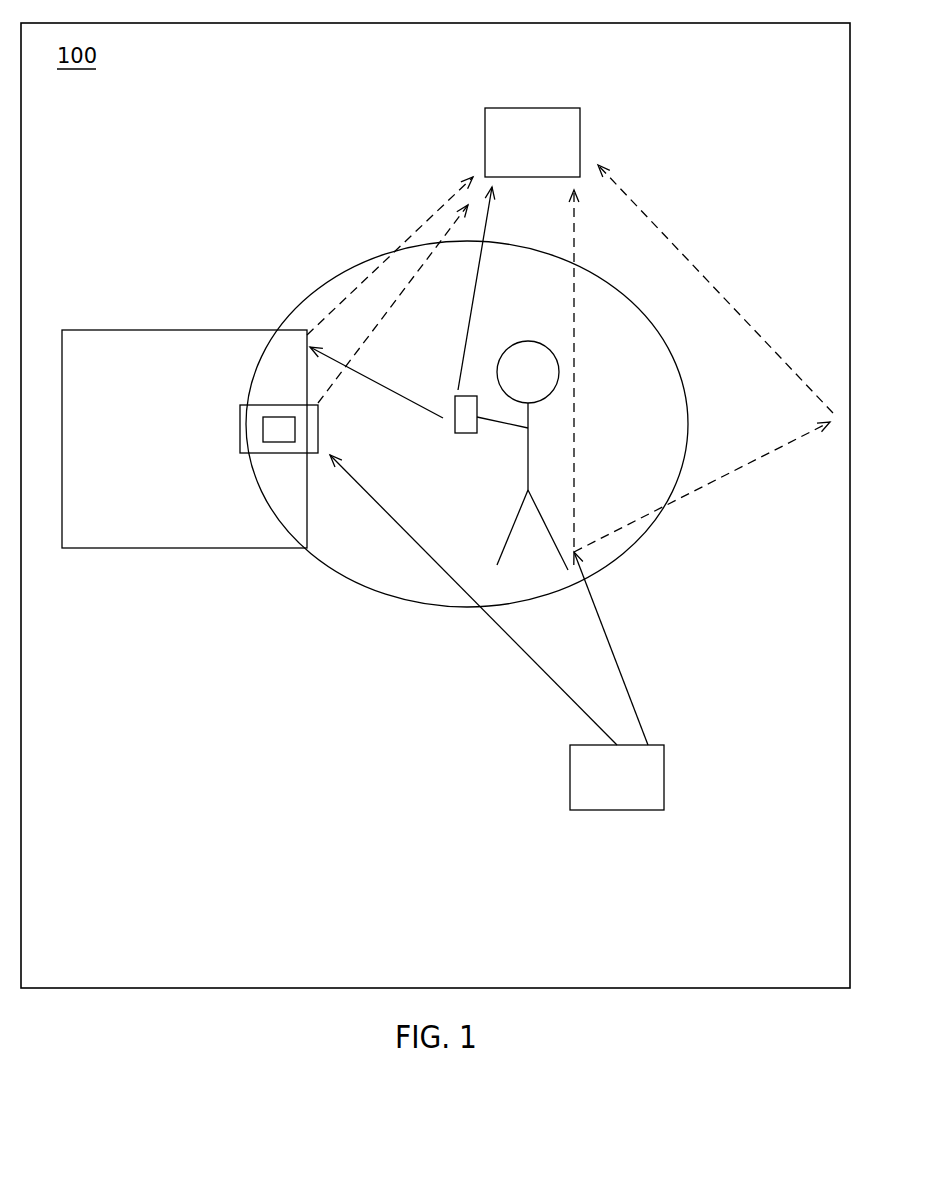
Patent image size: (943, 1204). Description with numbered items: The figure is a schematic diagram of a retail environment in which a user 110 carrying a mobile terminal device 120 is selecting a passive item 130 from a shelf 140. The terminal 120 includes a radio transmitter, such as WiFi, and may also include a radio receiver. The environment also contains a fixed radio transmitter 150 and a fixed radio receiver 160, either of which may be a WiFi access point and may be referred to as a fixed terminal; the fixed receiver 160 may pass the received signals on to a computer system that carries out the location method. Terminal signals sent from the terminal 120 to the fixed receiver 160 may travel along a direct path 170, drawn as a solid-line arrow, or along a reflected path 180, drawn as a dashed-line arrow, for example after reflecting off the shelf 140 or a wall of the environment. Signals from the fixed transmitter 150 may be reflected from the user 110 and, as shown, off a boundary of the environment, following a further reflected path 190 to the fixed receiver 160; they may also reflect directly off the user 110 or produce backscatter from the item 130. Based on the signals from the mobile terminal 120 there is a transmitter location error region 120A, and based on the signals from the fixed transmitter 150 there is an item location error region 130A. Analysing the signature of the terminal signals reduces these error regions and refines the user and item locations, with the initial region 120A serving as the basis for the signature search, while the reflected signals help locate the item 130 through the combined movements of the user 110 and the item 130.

The user 110 is at (543, 373).
The mobile terminal device 120 is at (463, 433).
The transmitter location error region 120A is at (385, 600).
The item 130 is at (250, 440).
The item location error region 130A is at (263, 445).
The shelf 140 is at (260, 330).
The fixed radio transmitter 150 is at (598, 788).
The fixed radio receiver 160 is at (566, 137).
The direct path 170 is at (467, 280).
The reflected path 180 is at (415, 232).
The reflected path 190 is at (720, 288).